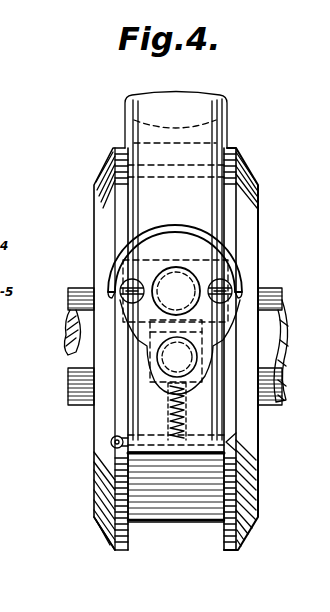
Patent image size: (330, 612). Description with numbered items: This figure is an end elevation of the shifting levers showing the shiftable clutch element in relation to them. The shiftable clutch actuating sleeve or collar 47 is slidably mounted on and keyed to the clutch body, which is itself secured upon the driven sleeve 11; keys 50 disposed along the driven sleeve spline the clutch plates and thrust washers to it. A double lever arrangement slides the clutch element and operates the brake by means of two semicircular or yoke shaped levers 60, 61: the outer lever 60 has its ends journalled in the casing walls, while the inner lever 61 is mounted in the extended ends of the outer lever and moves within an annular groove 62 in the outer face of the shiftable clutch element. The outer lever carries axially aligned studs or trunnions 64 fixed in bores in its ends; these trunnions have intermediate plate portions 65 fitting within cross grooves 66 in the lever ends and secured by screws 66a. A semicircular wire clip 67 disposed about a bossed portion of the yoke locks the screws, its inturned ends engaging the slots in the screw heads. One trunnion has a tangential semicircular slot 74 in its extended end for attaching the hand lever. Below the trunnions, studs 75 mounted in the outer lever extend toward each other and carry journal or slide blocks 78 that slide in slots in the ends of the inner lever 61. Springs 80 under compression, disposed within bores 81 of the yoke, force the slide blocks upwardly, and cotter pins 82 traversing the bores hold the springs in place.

The driven sleeve 11 is at (94, 404).
The shiftable clutch actuating sleeve or collar 47 is at (105, 518).
The keys 50 is at (94, 288).
The outer yoke shaped lever 60 is at (190, 104).
The inner yoke shaped lever 61 is at (240, 430).
The annular groove 62 is at (160, 524).
The studs or trunnions 64 is at (190, 288).
The intermediate plate portions 65 is at (232, 298).
The cross grooves 66 is at (222, 330).
The screws 66a is at (124, 287).
The wire clip 67 is at (176, 228).
The tangential semicircular slot 74 is at (160, 311).
The studs 75 is at (165, 365).
The journal or slide blocks 78 is at (193, 382).
The springs 80 is at (185, 437).
The bores 81 is at (168, 408).
The cotter pins 82 is at (114, 447).